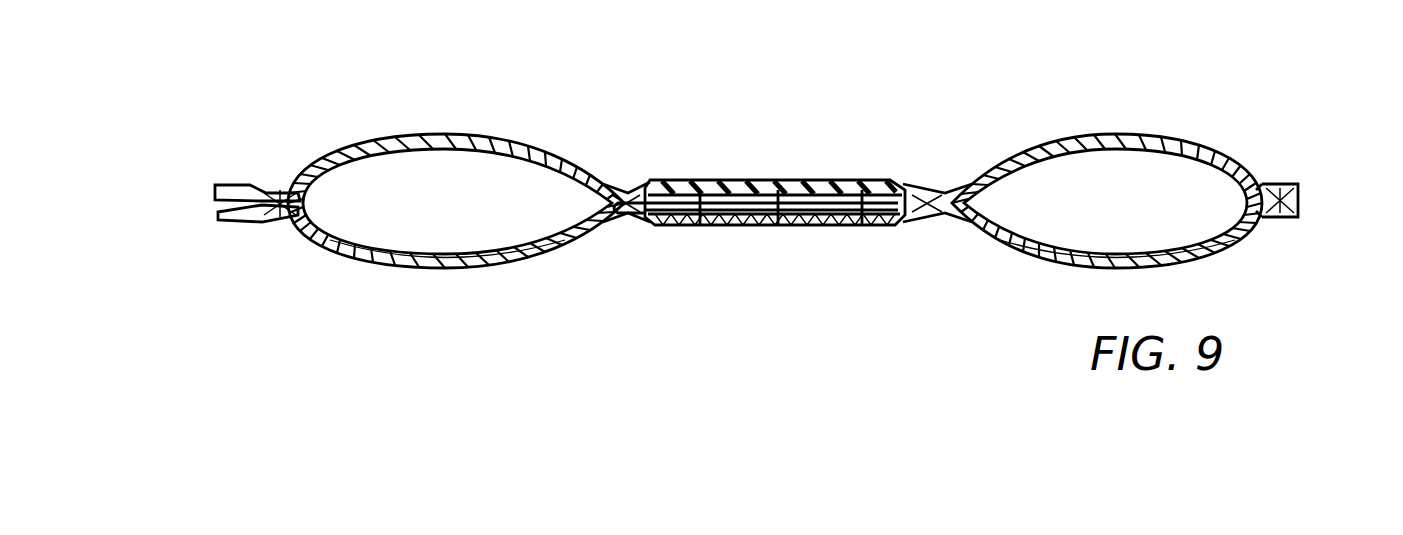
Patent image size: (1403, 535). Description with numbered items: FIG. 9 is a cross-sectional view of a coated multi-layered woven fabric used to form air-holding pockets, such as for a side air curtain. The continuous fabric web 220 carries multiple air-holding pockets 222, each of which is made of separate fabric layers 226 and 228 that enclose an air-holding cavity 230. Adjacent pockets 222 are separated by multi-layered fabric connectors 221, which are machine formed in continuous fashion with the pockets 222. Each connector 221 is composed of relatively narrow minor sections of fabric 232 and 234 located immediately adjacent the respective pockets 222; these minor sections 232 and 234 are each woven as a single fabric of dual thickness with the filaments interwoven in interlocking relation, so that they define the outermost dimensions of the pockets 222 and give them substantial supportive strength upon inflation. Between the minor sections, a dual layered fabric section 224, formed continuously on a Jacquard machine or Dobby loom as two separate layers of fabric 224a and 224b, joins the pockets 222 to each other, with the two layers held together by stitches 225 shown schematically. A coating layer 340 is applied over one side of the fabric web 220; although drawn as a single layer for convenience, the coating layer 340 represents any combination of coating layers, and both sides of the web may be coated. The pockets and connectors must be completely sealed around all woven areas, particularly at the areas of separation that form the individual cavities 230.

The multi-layered fabric web 220 is at (630, 226).
The multi-layered fabric connector 221 is at (897, 227).
The fabric pocket 222 is at (306, 160).
The dual layered fabric section 224 is at (853, 226).
The fabric layer 224a is at (815, 180).
The fabric layer 224b is at (808, 226).
The stitches 225 is at (719, 180).
The fabric layer 226 is at (390, 152).
The fabric layer 228 is at (400, 265).
The air-holding cavity 230 is at (460, 218).
The minor section of fabric 232 is at (617, 218).
The minor section of fabric 234 is at (272, 222).
The coating layer 340 is at (537, 132).